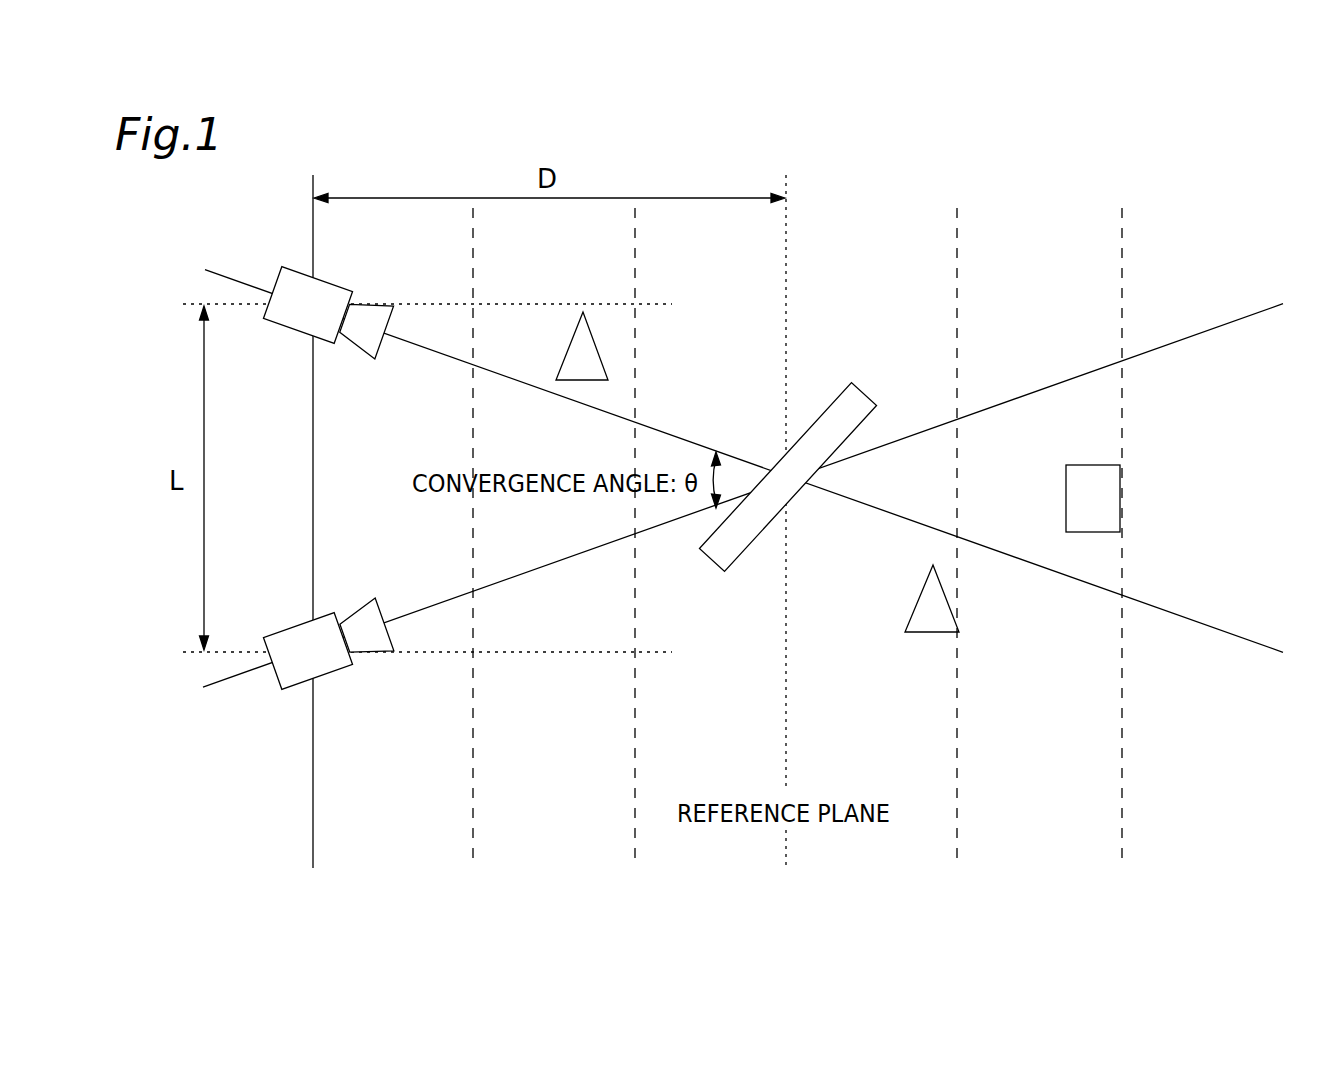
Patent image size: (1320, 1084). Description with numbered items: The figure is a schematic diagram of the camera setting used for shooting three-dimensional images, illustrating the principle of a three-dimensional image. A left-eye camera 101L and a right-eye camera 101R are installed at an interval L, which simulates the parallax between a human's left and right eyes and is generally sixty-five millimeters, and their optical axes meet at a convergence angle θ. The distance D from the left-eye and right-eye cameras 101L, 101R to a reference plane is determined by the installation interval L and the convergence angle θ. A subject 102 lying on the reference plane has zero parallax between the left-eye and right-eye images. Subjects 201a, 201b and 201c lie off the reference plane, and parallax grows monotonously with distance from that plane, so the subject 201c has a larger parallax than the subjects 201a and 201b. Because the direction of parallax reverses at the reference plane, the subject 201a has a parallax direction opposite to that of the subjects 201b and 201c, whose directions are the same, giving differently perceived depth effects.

The left-eye camera 101L is at (337, 285).
The right-eye camera 101R is at (336, 614).
The subject 102 is at (853, 382).
The subject 201a is at (572, 357).
The subject 201b is at (925, 625).
The subject 201c is at (1093, 478).